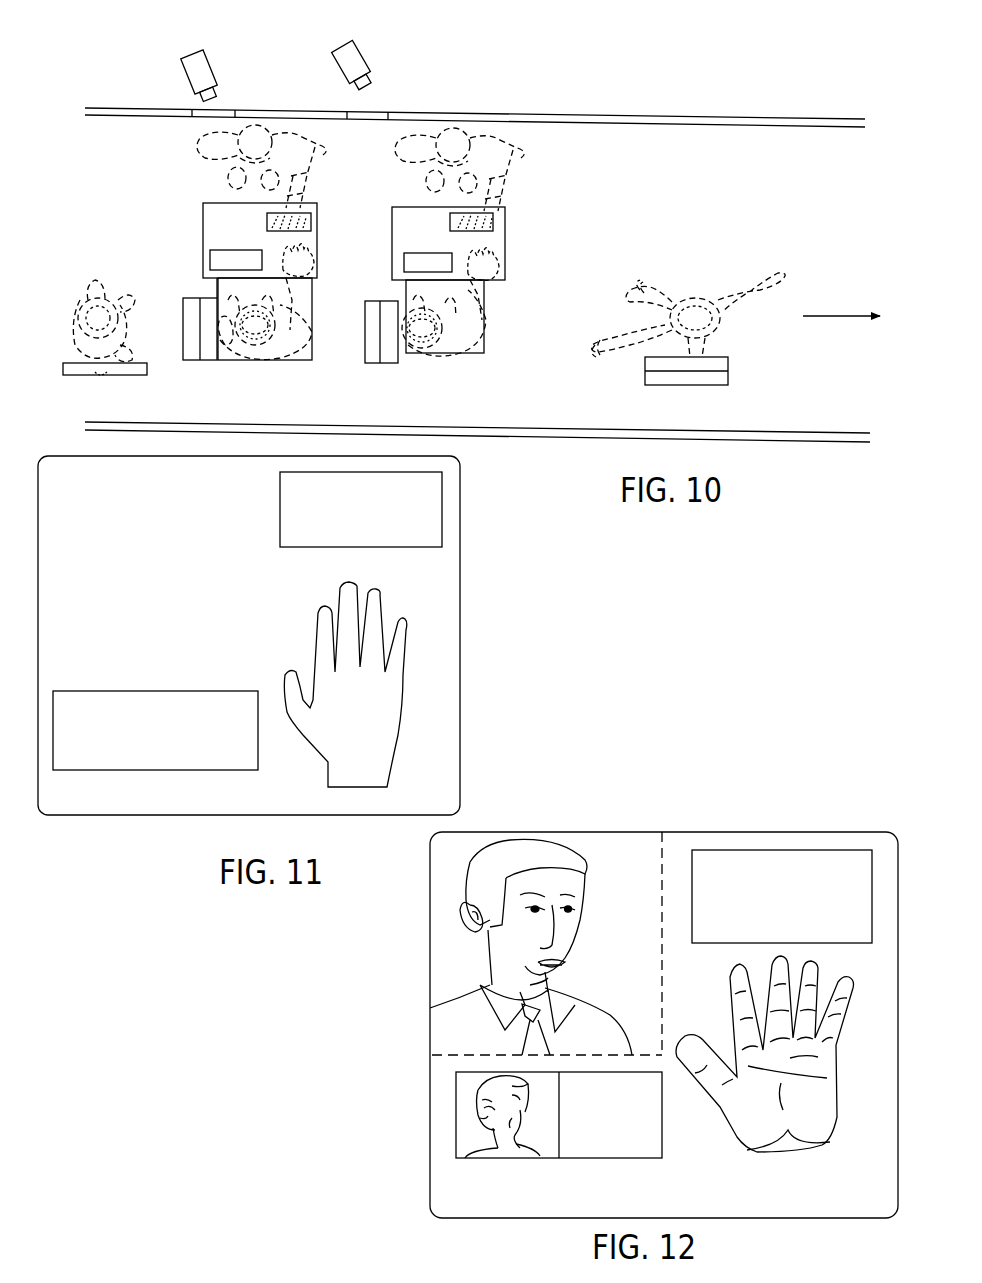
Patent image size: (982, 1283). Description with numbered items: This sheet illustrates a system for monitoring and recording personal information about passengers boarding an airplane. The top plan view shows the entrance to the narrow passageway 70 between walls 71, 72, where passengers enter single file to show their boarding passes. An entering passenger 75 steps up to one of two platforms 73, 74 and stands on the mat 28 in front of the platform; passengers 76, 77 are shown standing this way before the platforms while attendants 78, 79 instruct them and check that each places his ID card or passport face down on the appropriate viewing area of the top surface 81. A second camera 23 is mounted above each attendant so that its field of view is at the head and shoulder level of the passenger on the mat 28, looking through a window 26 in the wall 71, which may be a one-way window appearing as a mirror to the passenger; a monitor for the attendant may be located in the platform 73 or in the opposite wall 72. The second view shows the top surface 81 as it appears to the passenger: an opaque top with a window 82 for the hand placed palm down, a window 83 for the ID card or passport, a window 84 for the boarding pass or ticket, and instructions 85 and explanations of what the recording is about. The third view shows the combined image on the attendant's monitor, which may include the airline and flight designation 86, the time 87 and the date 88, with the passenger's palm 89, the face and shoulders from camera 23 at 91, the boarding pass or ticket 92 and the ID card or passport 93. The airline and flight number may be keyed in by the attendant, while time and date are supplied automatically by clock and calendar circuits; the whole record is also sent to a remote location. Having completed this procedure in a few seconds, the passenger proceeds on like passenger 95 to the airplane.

In FIG. 10, the second camera 23 is at (206, 52).
In FIG. 10, the window 26 is at (218, 110).
In FIG. 10, the mat 28 is at (200, 298).
In FIG. 10, the narrow passageway 70 is at (108, 150).
In FIG. 10, the wall 71 is at (133, 118).
In FIG. 10, the wall 72 is at (117, 422).
In FIG. 10, the platform 73 is at (203, 205).
In FIG. 10, the platform 74 is at (392, 209).
In FIG. 10, the passenger 75 is at (85, 278).
In FIG. 10, the passenger 76 is at (250, 360).
In FIG. 10, the passenger 77 is at (455, 353).
In FIG. 10, the attendant 78 is at (317, 150).
In FIG. 10, the attendant 79 is at (525, 150).
In FIG. 10, the top surface 81 is at (221, 230).
In FIG. 11, the top surface 81 is at (448, 603).
In FIG. 11, the window 82 is at (403, 712).
In FIG. 11, the window 83 is at (189, 691).
In FIG. 11, the window 84 is at (442, 501).
In FIG. 11, the instructions 85 is at (77, 466).
In FIG. 12, the airline and flight designation 86 is at (452, 1177).
In FIG. 12, the time 87 is at (822, 1160).
In FIG. 12, the date 88 is at (848, 1195).
In FIG. 12, the passenger's palm 89 is at (843, 1065).
In FIG. 12, the face and shoulders 91 is at (614, 855).
In FIG. 12, the boarding pass or ticket 92 is at (784, 846).
In FIG. 12, the ID card or passport 93 is at (442, 1085).
In FIG. 10, the passenger 95 is at (710, 265).